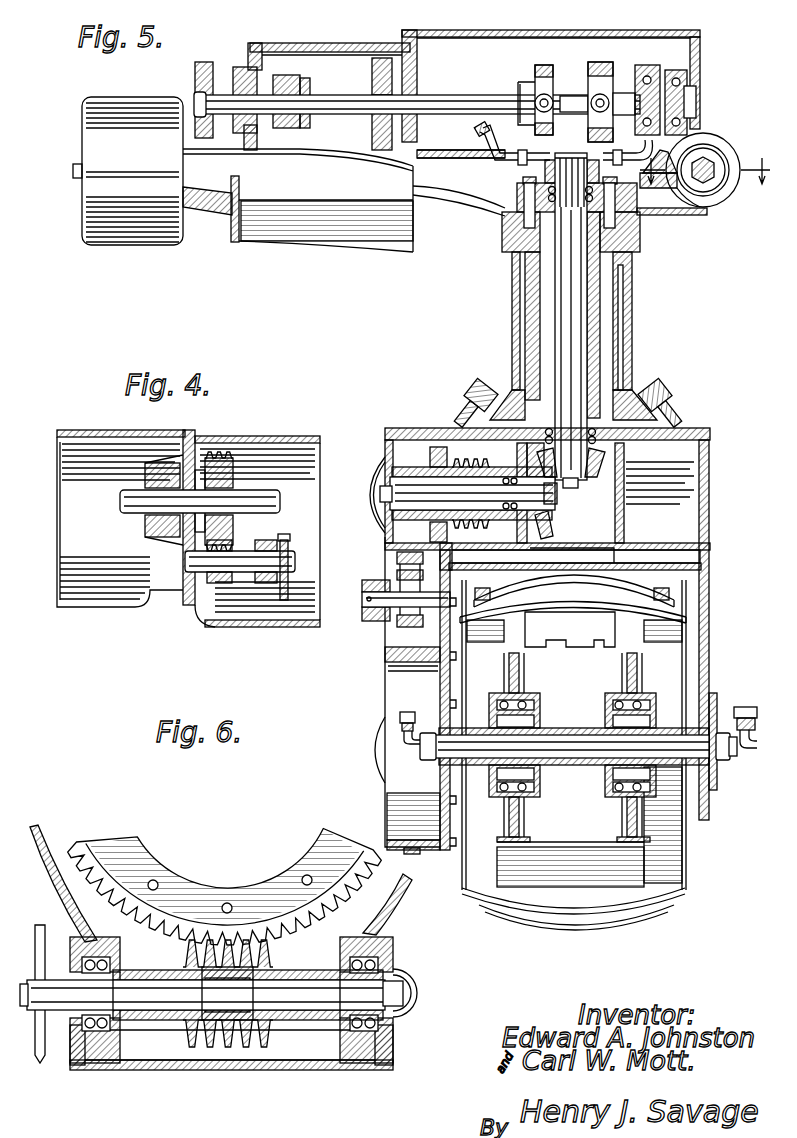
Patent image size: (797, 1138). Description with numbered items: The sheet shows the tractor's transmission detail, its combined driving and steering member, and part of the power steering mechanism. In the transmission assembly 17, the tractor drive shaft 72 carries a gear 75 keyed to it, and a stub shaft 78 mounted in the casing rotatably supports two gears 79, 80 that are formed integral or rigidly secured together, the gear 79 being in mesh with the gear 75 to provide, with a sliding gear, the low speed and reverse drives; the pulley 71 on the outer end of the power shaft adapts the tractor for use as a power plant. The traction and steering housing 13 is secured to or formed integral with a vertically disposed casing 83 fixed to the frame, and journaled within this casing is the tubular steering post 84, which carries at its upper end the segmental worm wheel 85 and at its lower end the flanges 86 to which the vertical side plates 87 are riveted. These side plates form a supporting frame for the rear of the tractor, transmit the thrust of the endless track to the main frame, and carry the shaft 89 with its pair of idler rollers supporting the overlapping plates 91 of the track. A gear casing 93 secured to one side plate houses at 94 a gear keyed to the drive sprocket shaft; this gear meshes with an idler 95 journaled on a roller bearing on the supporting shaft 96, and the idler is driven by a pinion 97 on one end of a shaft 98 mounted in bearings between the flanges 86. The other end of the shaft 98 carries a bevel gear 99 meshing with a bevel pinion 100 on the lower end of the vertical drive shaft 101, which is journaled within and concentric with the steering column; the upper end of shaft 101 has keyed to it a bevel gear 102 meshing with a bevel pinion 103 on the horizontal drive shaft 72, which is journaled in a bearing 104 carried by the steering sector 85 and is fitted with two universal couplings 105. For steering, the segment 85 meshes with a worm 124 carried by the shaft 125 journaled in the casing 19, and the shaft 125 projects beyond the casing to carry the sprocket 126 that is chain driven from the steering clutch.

In FIG. 5, the traction and steering member 13 is at (700, 72).
In FIG. 4, the traction and steering member 13 is at (86, 432).
In FIG. 4, the transmission assembly 17 is at (246, 437).
In FIG. 6, the steering gear casing 19 is at (405, 1020).
In FIG. 5, the pulley 71 is at (149, 247).
In FIG. 5, the tractor drive shaft 72 is at (470, 95).
In FIG. 4, the tractor drive shaft 72 is at (280, 503).
In FIG. 5, the gear 75 is at (381, 58).
In FIG. 4, the gear 75 is at (230, 484).
In FIG. 4, the stub shaft 78 is at (300, 560).
In FIG. 4, the gear 79 is at (230, 583).
In FIG. 4, the gear 80 is at (268, 583).
In FIG. 5, the vertically disposed casing 83 is at (632, 336).
In FIG. 5, the tubular steering post 84 is at (617, 312).
In FIG. 5, the segmental worm wheel 85 is at (668, 190).
In FIG. 6, the segmental worm wheel 85 is at (242, 888).
In FIG. 5, the flange 86 is at (674, 432).
In FIG. 5, the vertical side plate 87 is at (709, 611).
In FIG. 5, the shaft 89 is at (589, 767).
In FIG. 5, the overlapping plates 91 is at (651, 594).
In FIG. 5, the gear casing 93 is at (385, 661).
In FIG. 5, the gear housing location 94 is at (374, 748).
In FIG. 5, the idler 95 is at (407, 550).
In FIG. 5, the supporting shaft 96 is at (370, 608).
In FIG. 5, the pinion 97 is at (385, 467).
In FIG. 5, the shaft 98 is at (459, 492).
In FIG. 5, the bevel gear 99 is at (551, 530).
In FIG. 5, the bevel pinion 100 is at (590, 473).
In FIG. 5, the vertical drive shaft 101 is at (575, 361).
In FIG. 5, the bevel gear 102 is at (510, 156).
In FIG. 5, the bevel pinion 103 is at (650, 70).
In FIG. 5, the bearing 104 is at (690, 92).
In FIG. 5, the universal coupling 105 is at (600, 62).
In FIG. 6, the worm 124 is at (240, 1050).
In FIG. 6, the shaft 125 is at (313, 1012).
In FIG. 6, the sprocket 126 is at (40, 1063).